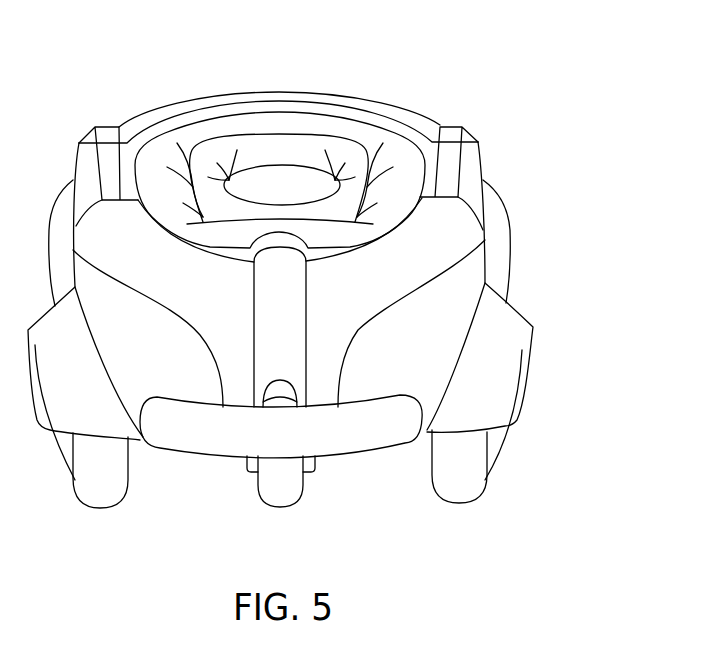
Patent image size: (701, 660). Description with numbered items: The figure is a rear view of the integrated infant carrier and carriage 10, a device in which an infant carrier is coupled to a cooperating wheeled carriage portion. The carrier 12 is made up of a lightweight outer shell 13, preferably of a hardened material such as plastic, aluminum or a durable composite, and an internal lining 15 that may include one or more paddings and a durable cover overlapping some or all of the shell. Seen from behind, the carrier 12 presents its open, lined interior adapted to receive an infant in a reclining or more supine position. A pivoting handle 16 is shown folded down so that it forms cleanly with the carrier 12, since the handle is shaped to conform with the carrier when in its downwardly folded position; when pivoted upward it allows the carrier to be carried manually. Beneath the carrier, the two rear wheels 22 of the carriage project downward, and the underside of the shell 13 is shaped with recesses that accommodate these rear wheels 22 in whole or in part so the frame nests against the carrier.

The integrated infant carrier and carriage 10 is at (283, 61).
The carrier 12 is at (506, 154).
The outer shell 13 is at (476, 268).
The internal lining 15 is at (279, 149).
The pivoting handle 16 is at (427, 124).
The rear wheels 22 is at (97, 493).